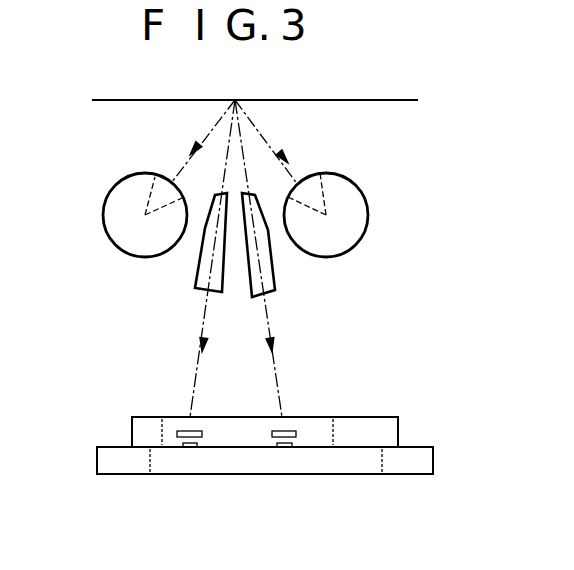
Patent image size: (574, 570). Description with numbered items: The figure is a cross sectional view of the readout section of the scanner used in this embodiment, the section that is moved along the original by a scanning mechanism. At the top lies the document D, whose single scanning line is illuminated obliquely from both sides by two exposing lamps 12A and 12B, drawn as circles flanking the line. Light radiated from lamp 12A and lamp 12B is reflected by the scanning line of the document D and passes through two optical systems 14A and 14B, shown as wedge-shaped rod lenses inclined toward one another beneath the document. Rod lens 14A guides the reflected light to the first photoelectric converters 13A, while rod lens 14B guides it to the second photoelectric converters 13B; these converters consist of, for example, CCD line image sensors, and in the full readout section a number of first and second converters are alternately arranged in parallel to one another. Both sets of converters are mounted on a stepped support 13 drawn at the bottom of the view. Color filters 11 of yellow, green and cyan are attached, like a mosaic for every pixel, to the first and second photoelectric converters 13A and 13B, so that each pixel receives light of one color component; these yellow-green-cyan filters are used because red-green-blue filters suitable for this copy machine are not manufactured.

The document D is at (389, 98).
The exposing lamp 12A is at (340, 185).
The exposing lamp 12B is at (138, 180).
The optical system (rod lens) 14A is at (196, 281).
The optical system (rod lens) 14B is at (272, 285).
The color filters 11 is at (190, 431).
The substrate / base plate 13 is at (424, 468).
The first photoelectric converter 13A is at (190, 448).
The second photoelectric converter 13B is at (283, 448).